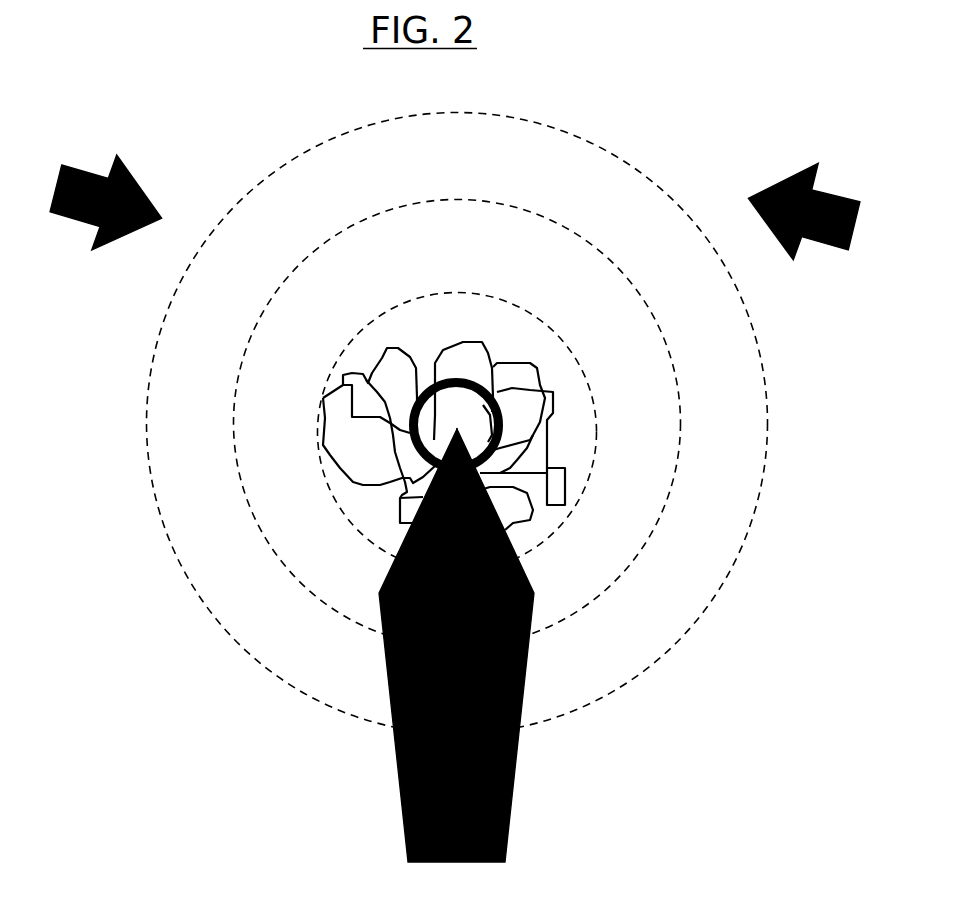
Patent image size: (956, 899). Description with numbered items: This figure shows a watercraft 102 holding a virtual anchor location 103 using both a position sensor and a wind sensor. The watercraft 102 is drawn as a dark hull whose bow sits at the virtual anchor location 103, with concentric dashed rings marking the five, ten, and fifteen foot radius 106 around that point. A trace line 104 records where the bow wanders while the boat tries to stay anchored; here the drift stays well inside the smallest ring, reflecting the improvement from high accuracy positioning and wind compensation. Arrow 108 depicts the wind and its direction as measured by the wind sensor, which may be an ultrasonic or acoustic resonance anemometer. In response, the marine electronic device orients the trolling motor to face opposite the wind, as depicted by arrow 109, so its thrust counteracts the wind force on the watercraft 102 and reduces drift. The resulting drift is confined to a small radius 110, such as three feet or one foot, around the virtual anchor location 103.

The watercraft 102 is at (433, 645).
The virtual anchor location 103 is at (544, 264).
The trace line 104 is at (340, 407).
The radius 106 is at (422, 423).
The arrow 108 is at (88, 176).
The arrow 109 is at (786, 187).
The radius 110 is at (283, 396).